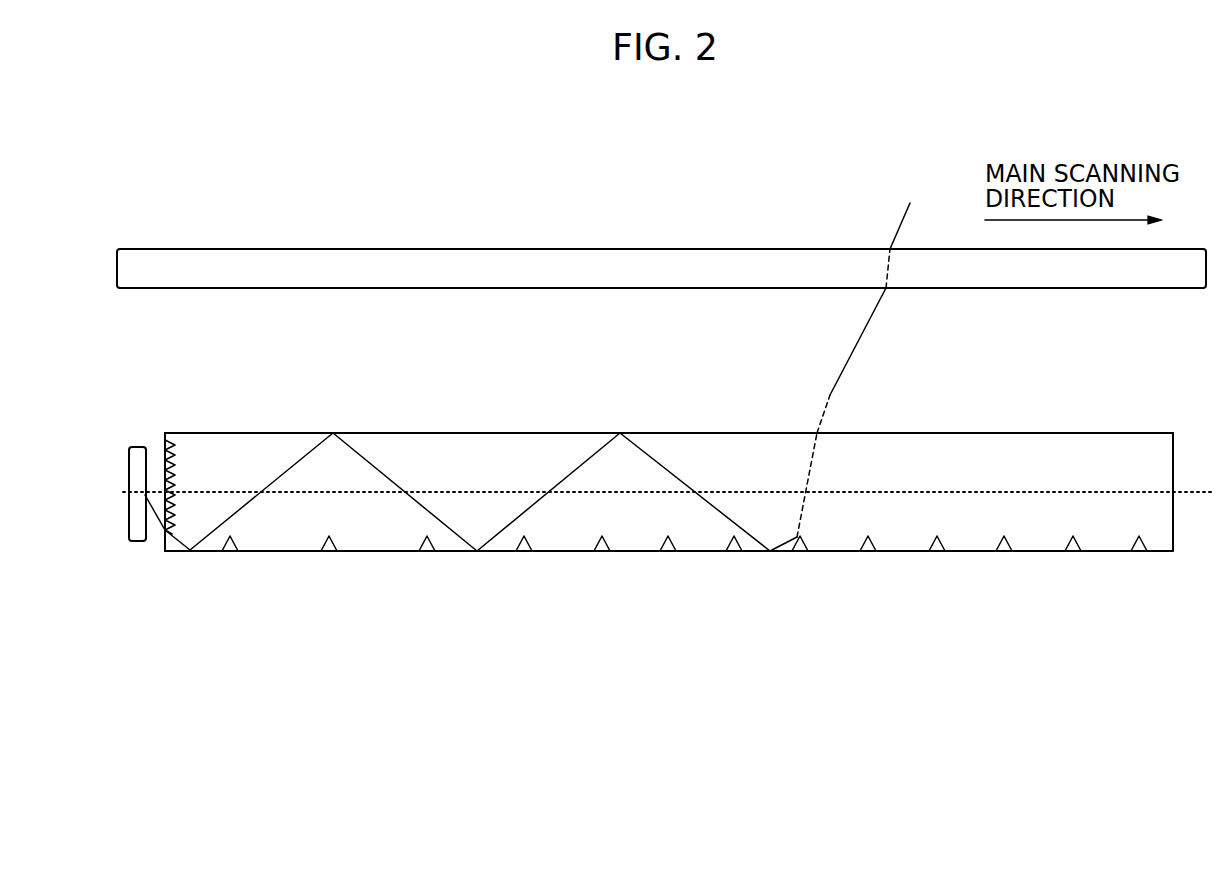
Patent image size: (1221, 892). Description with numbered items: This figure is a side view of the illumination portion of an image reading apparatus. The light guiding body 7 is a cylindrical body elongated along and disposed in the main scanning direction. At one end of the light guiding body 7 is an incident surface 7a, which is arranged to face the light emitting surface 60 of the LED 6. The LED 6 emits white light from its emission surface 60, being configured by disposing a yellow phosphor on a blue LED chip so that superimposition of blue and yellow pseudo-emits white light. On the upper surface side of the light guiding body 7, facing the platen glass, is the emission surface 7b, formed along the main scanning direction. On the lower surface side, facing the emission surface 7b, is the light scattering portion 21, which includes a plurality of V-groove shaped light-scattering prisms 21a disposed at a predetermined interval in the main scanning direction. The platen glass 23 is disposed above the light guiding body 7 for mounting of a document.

The LED 6 is at (135, 446).
The light guiding body 7 is at (1066, 428).
The incident surface 7a is at (162, 439).
The emission surface 7b is at (770, 433).
The light scattering portion 21 is at (418, 551).
The light-scattering prism 21a is at (937, 540).
The platen glass 23 is at (692, 262).
The light emitting surface 60 is at (145, 477).